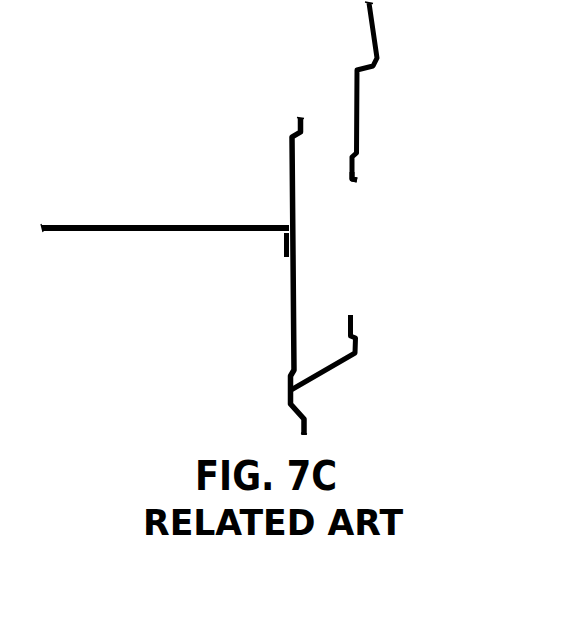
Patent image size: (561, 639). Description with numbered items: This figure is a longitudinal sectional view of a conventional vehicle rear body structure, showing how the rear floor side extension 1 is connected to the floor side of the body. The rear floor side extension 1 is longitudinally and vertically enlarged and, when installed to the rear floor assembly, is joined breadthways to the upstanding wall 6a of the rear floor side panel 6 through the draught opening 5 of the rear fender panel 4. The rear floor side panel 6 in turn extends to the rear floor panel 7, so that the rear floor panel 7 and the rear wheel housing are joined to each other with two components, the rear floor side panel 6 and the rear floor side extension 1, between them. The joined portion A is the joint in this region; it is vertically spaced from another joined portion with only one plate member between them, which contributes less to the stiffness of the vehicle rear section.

The rear floor side extension 1 is at (287, 333).
The rear fender panel 4 is at (363, 125).
The draught opening 5 is at (360, 178).
The rear floor side panel 6 is at (225, 225).
The upstanding wall 6a is at (285, 250).
The rear floor panel 7 is at (121, 224).
The joined portion A is at (297, 237).